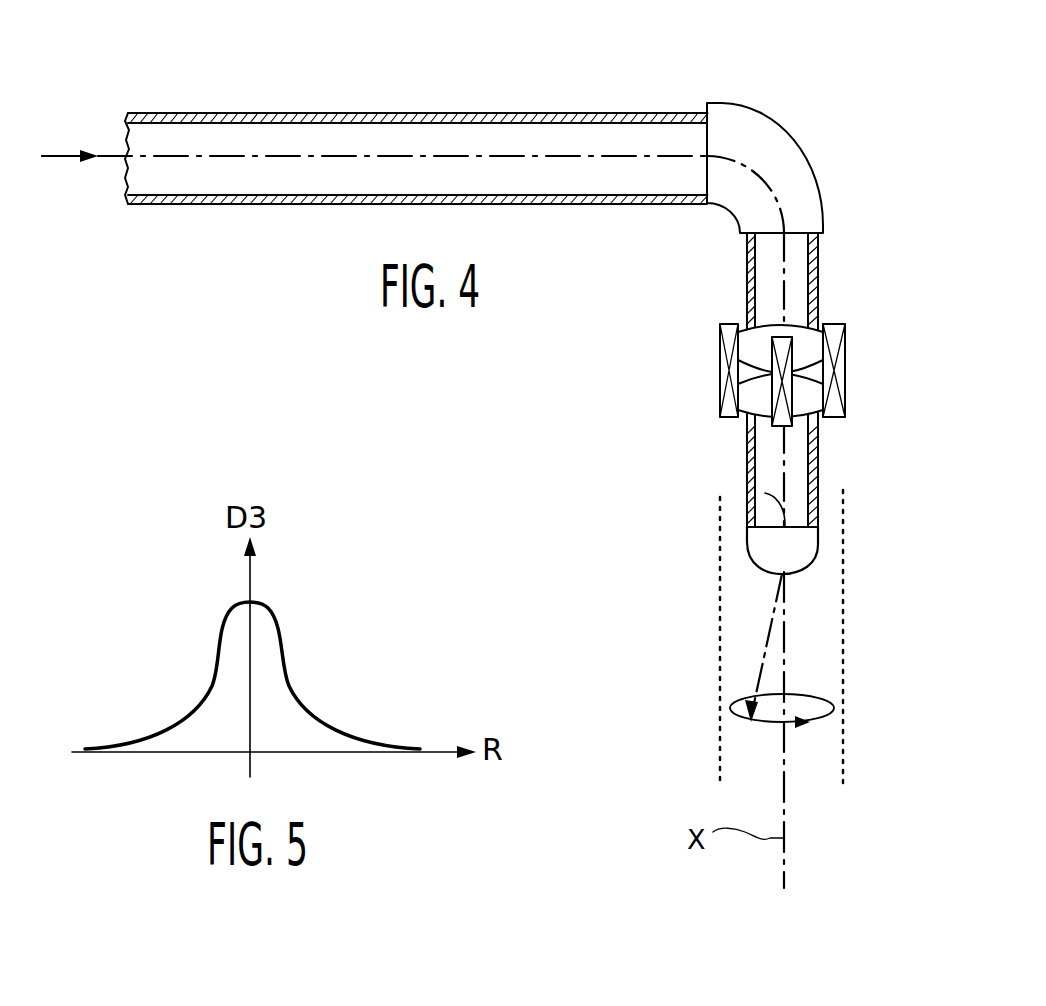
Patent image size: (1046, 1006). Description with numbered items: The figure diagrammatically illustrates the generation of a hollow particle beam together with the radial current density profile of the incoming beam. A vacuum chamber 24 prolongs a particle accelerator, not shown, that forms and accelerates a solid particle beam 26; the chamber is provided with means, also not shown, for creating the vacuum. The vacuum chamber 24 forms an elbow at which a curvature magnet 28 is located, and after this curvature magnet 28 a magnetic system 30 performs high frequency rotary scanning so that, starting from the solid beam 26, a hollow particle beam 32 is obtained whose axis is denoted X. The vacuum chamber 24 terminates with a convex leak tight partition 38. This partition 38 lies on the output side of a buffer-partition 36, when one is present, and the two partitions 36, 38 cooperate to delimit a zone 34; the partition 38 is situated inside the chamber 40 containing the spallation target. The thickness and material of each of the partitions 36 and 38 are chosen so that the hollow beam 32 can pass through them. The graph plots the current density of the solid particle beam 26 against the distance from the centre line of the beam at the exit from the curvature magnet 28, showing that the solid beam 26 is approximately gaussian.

The vacuum chamber 24 is at (748, 257).
The solid particle beam 26 is at (63, 157).
The curvature magnet 28 is at (793, 155).
The magnetic system 30 is at (730, 362).
The hollow particle beam 32 is at (758, 612).
The zone 34 is at (786, 545).
The buffer-partition 36 is at (765, 497).
The convex leak tight partition 38 is at (786, 573).
The chamber containing the spallation target 40 is at (843, 752).